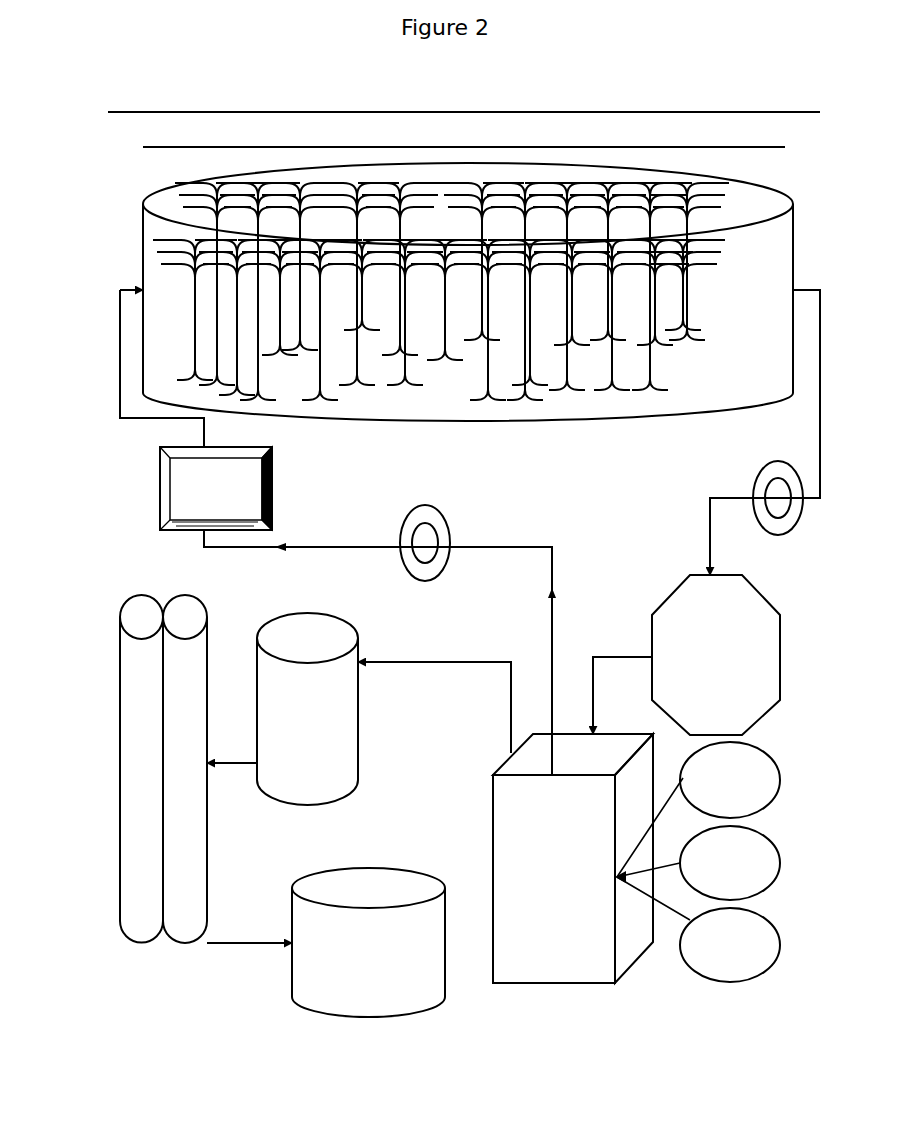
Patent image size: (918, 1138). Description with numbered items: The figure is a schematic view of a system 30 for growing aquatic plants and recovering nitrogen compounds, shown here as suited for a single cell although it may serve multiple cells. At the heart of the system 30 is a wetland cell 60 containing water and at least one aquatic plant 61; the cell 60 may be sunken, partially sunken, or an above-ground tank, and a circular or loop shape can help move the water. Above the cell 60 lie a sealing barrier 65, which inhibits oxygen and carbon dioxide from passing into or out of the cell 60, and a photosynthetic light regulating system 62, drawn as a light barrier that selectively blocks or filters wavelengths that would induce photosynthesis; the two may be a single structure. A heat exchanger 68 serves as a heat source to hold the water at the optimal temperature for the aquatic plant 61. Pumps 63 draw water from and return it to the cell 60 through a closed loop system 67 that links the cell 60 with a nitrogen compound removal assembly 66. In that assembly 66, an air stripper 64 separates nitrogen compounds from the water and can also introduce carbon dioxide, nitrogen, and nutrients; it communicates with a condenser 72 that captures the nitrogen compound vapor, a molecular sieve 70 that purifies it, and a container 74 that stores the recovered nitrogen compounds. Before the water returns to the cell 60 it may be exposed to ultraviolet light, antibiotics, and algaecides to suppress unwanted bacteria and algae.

The system 30 is at (712, 88).
The cell 60 is at (797, 282).
The aquatic plant 61 is at (193, 337).
The photosynthetic light regulating system 62 is at (150, 112).
The pumps 63 is at (452, 528).
The air stripper 64 is at (553, 985).
The sealing barrier 65 is at (190, 147).
The nitrogen compound removal assembly 66 is at (473, 1018).
The closed loop system 67 is at (103, 440).
The heat exchanger 68 is at (160, 488).
The molecular sieve 70 is at (148, 595).
The condenser 72 is at (358, 640).
The container 74 is at (345, 866).